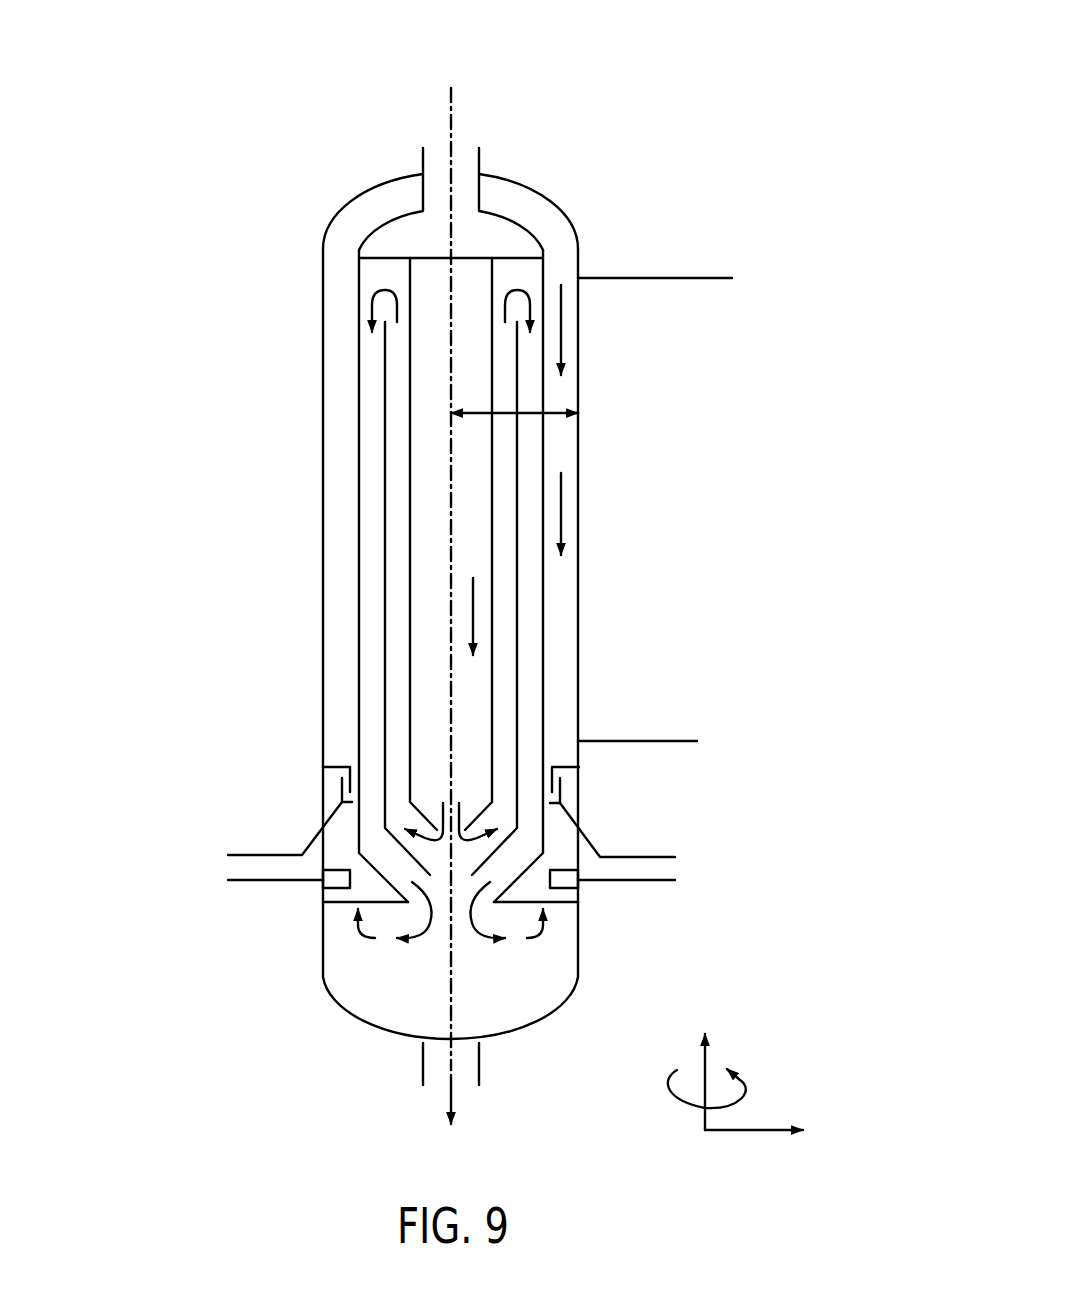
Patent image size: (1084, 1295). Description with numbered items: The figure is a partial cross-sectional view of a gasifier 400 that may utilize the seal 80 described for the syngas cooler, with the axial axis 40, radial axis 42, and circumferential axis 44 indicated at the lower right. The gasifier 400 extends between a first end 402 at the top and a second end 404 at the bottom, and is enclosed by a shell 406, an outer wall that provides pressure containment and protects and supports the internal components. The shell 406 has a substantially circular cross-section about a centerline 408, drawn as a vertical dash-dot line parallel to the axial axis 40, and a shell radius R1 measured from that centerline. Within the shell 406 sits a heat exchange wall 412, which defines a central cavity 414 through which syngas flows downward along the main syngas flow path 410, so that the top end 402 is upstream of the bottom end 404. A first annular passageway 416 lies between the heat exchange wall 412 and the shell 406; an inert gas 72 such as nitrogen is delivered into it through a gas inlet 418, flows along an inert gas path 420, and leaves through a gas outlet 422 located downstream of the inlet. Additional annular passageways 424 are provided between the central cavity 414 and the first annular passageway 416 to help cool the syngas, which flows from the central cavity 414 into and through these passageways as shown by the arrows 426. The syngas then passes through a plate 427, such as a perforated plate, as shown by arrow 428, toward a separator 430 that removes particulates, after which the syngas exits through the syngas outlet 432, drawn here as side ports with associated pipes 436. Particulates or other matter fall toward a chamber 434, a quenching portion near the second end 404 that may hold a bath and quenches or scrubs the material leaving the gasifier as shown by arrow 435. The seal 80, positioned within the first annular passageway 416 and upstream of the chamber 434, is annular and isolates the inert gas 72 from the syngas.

The gasifier 400 is at (662, 112).
The first end 402 is at (503, 175).
The second end 404 is at (508, 1040).
The shell 406 is at (323, 405).
The centerline 408 is at (453, 118).
The main syngas flow path 410 is at (473, 610).
The heat exchange wall 412 is at (358, 618).
The central cavity 414 is at (431, 520).
The first annular passageway 416 is at (343, 673).
The gas inlet 418 is at (683, 278).
The inert gas path 420 is at (562, 508).
The gas outlet 422 is at (637, 741).
The additional annular passageways 424 is at (372, 547).
The arrows 426 is at (373, 303).
The plate 427 is at (338, 903).
The arrow 428 is at (358, 935).
The separator 430 is at (562, 888).
The syngas outlet 432 is at (245, 880).
The chamber 434 is at (398, 1026).
The arrow 435 is at (448, 1088).
The side pipe 436 is at (245, 855).
The inert gas 72 is at (572, 278).
The seal 80 is at (298, 785).
The shell radius R1 is at (525, 413).
The axial axis 40 is at (680, 1107).
The radial axis 42 is at (747, 1130).
The circumferential axis 44 is at (743, 1088).